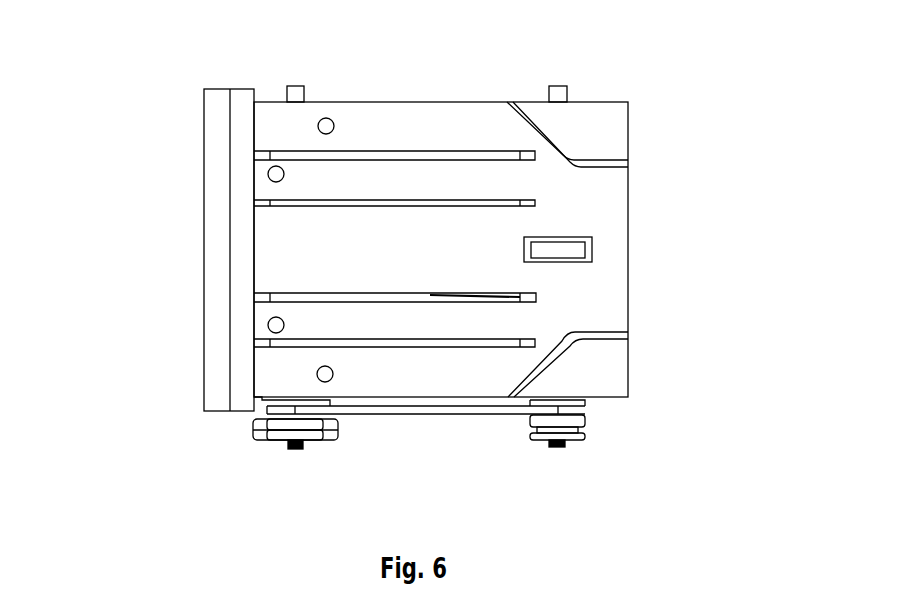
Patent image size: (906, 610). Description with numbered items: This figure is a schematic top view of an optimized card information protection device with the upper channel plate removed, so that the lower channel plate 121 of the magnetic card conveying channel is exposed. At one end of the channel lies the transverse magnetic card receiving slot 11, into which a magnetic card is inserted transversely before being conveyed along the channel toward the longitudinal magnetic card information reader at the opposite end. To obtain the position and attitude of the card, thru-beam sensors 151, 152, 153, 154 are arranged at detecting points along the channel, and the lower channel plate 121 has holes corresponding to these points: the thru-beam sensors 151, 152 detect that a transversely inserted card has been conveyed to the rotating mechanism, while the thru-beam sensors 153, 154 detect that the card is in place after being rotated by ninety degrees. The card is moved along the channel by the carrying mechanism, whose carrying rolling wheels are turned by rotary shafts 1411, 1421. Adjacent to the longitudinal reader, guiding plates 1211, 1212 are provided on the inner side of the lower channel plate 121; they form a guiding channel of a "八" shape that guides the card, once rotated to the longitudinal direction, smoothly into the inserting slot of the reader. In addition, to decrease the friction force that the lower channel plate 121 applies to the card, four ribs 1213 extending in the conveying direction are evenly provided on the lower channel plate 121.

The transverse magnetic card receiving slot 11 is at (225, 125).
The lower channel plate 121 is at (605, 113).
The guiding plate 1211 is at (578, 167).
The guiding plate 1212 is at (558, 355).
The rib 1213 is at (536, 297).
The thru-beam sensor 151 is at (327, 376).
The thru-beam sensor 152 is at (326, 126).
The thru-beam sensor 153 is at (274, 176).
The thru-beam sensor 154 is at (274, 326).
The rotary shaft 1411 is at (290, 446).
The rotary shaft 1421 is at (565, 447).